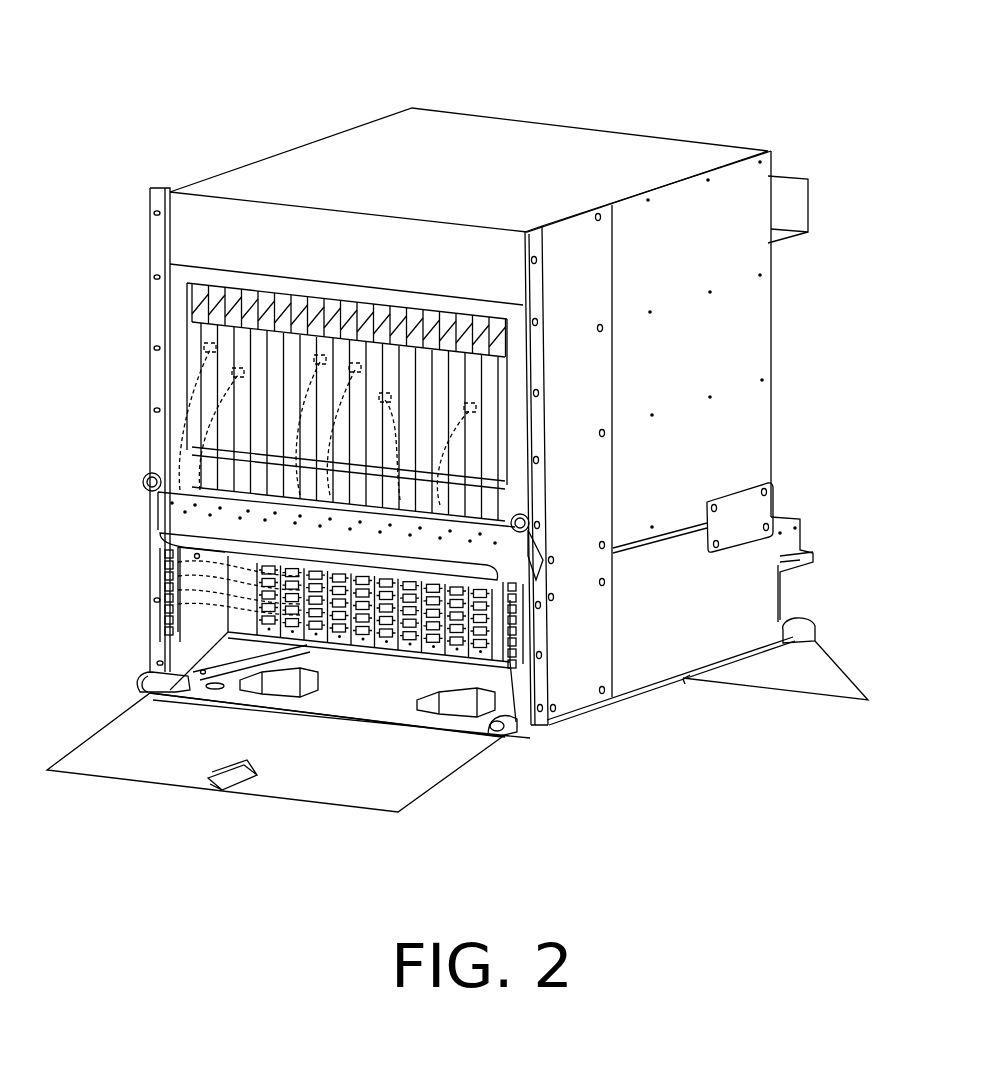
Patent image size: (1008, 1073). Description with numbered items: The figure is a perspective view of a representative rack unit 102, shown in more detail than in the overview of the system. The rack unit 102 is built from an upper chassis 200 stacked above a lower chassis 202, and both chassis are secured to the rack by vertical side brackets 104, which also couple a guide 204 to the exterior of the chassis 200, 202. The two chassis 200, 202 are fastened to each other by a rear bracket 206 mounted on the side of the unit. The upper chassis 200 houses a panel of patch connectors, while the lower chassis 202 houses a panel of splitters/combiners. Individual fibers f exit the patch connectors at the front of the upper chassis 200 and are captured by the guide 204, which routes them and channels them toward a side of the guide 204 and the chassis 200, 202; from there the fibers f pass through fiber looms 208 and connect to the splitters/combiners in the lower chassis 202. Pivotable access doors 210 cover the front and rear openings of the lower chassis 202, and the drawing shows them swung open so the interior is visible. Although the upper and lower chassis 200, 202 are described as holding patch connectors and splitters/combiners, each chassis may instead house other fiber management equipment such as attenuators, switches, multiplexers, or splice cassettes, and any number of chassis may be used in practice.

The rack unit 102 is at (150, 147).
The brackets 104 is at (157, 232).
The upper chassis 200 is at (733, 342).
The lower chassis 202 is at (752, 605).
The guide 204 is at (172, 517).
The rear bracket 206 is at (745, 515).
The fiber looms 208 is at (145, 617).
The access doors 210 is at (397, 793).
The fibers f is at (160, 450).